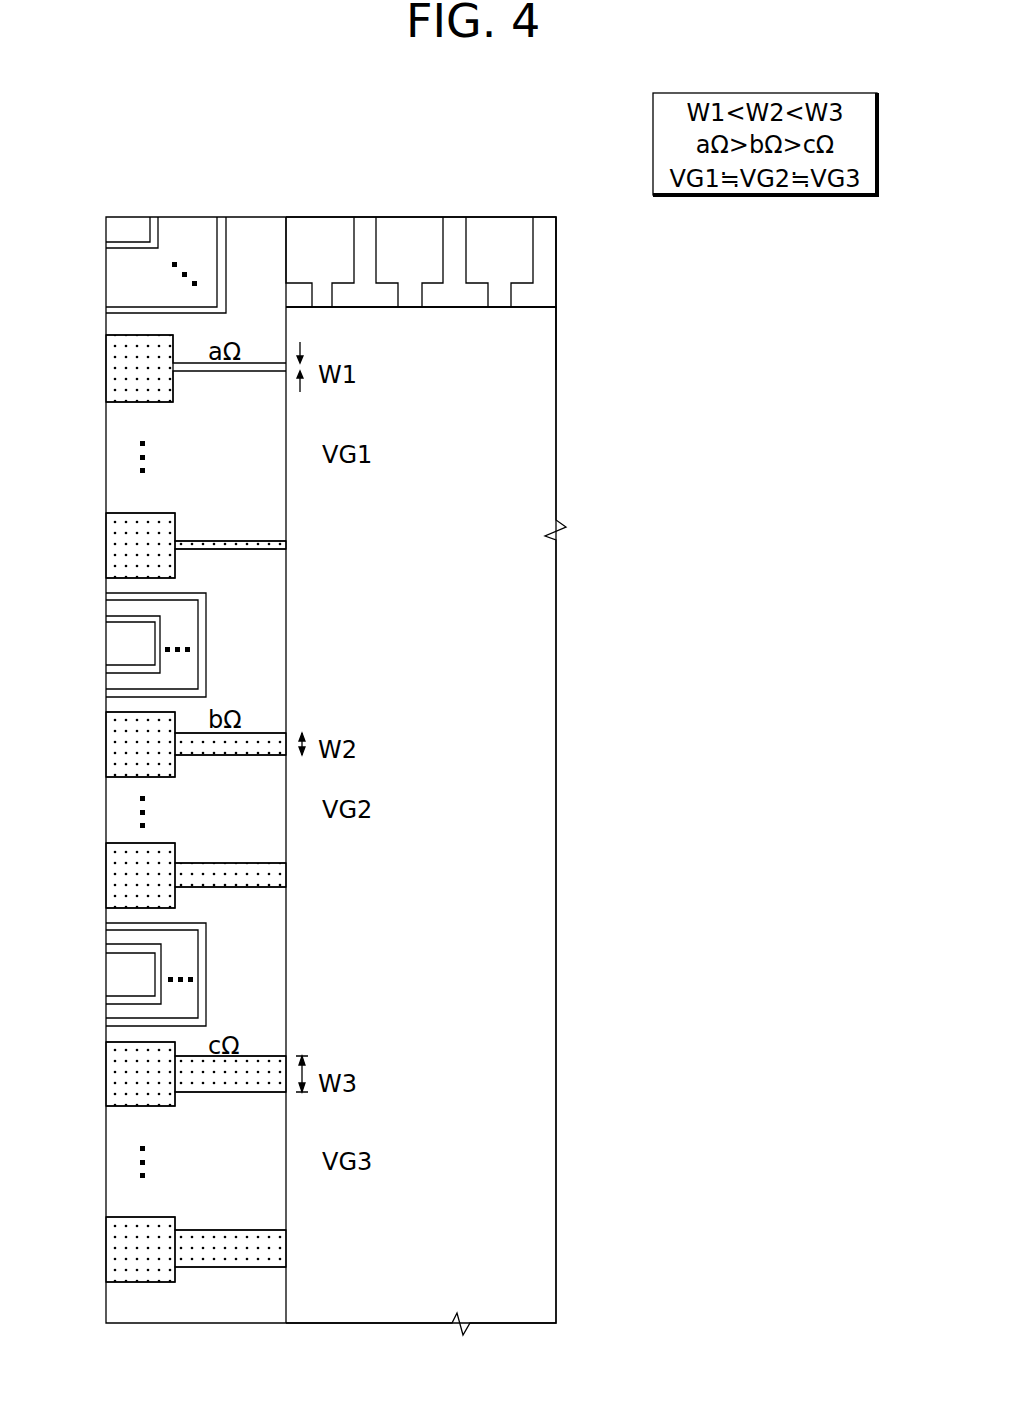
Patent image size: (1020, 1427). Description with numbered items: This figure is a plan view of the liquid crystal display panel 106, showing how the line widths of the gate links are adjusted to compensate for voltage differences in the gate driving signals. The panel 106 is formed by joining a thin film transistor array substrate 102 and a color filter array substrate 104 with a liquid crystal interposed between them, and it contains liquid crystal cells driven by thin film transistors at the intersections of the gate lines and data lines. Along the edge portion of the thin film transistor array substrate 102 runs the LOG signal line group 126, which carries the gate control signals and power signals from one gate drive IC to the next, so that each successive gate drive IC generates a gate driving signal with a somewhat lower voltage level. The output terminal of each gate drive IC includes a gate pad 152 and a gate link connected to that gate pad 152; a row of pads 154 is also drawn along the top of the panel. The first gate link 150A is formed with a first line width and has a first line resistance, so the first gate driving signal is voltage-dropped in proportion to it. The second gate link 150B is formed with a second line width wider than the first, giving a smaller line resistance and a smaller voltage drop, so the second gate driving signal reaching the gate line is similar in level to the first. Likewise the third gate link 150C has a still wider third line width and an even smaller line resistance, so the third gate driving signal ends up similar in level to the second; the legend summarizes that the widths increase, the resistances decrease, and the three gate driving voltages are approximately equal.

The thin film transistor array substrate 102 is at (548, 283).
The color filter array substrate 104 is at (548, 352).
The liquid crystal display panel 106 is at (668, 278).
The LOG signal line group 126 is at (226, 240).
The gate pad 152 is at (116, 370).
The first gate link 150A is at (228, 373).
The second gate link 150B is at (232, 757).
The third gate link 150C is at (233, 1094).
The pads 154 is at (502, 226).